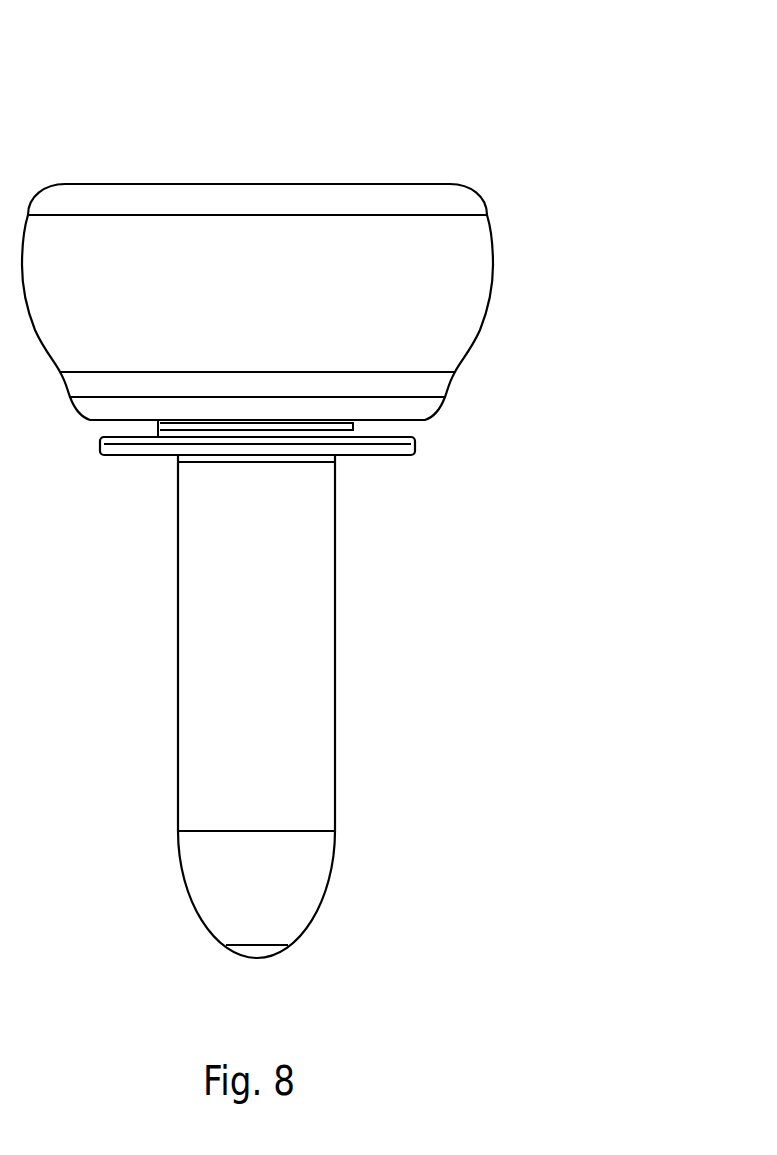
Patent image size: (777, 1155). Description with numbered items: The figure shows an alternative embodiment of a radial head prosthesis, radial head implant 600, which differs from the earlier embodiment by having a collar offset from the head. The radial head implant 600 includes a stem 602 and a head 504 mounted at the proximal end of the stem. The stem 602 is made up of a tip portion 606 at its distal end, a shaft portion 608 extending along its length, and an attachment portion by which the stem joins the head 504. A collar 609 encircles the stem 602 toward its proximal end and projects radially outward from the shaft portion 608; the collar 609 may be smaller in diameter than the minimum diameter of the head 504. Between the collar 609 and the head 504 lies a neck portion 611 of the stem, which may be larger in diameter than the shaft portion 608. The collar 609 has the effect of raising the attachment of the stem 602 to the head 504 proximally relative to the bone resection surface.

The radial head implant 600 is at (500, 157).
The head 504 is at (460, 322).
The neck portion 611 is at (353, 430).
The collar 609 is at (417, 450).
The stem 602 is at (315, 643).
The shaft portion 608 is at (197, 621).
The tip portion 606 is at (213, 902).